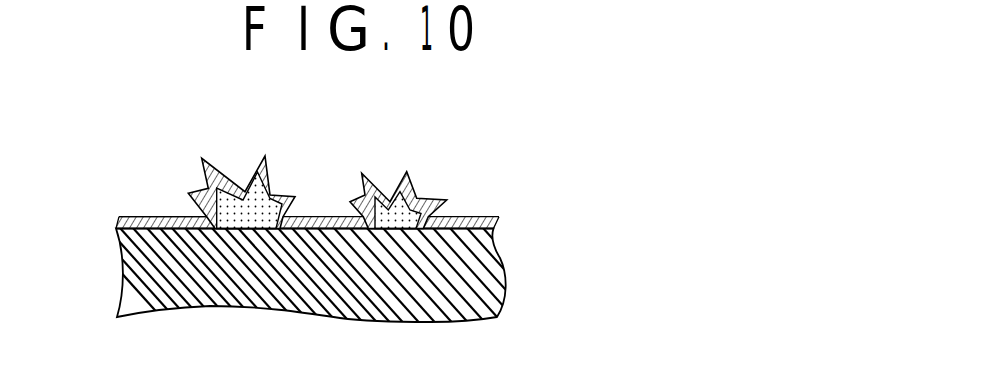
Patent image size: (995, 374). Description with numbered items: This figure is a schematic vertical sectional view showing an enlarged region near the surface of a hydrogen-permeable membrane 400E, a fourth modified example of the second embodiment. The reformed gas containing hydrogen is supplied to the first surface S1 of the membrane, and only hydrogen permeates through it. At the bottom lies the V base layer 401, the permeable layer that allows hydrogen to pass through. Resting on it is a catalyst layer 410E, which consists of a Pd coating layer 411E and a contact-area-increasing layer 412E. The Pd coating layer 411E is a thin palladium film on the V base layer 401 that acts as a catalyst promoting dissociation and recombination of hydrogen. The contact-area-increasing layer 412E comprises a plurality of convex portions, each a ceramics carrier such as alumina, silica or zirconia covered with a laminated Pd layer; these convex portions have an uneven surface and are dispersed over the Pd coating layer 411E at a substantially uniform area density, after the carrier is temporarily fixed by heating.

The hydrogen-permeable membrane 400E is at (457, 143).
The catalyst layer 410E is at (635, 165).
The Pd coating layer 411E is at (499, 221).
The contact-area-increasing layer 412E is at (508, 196).
The V base layer 401 is at (505, 263).
The first surface S1 is at (138, 180).